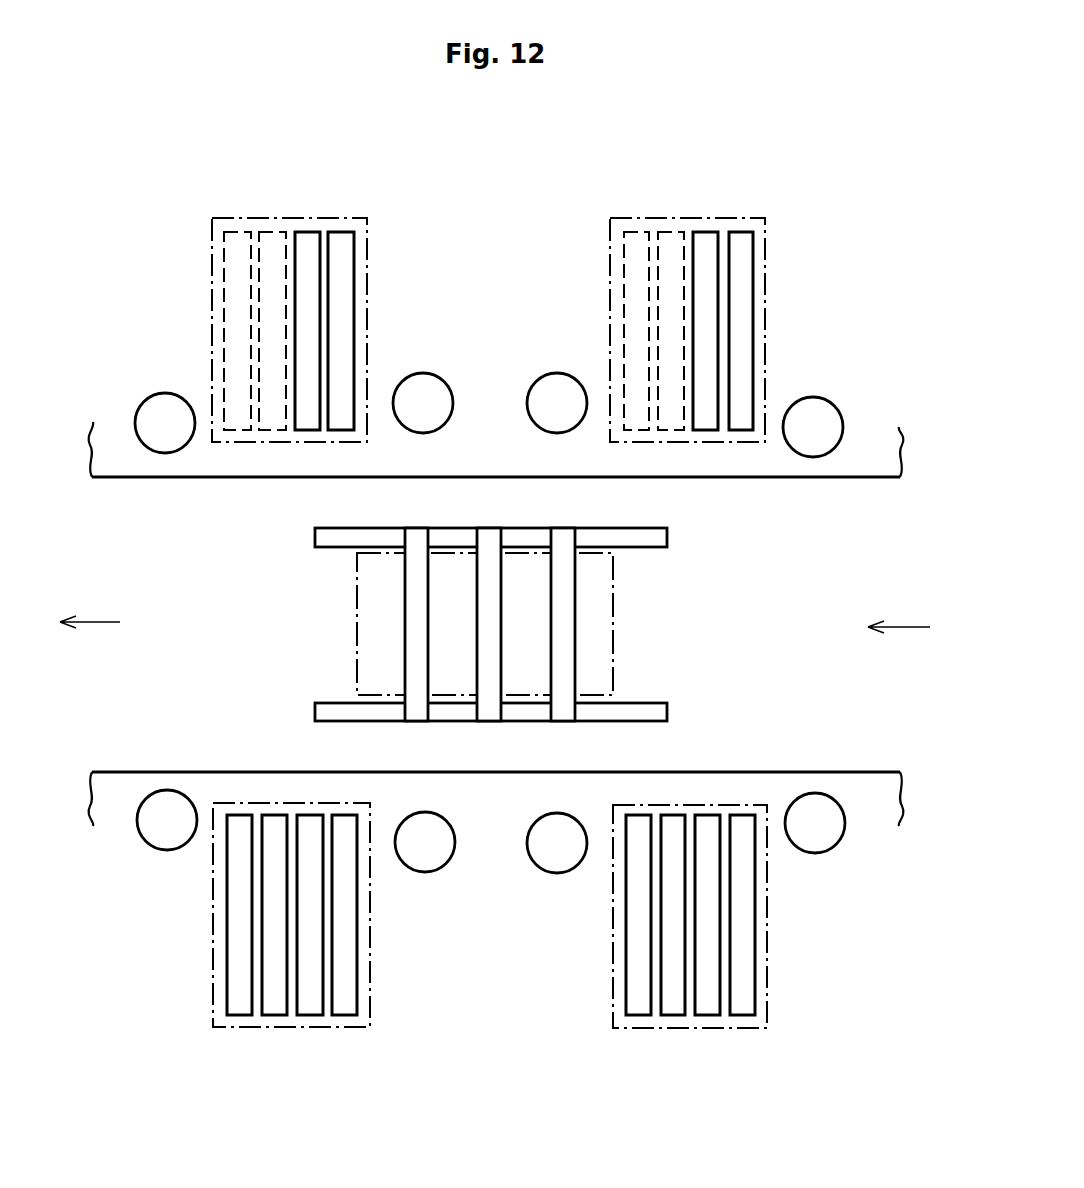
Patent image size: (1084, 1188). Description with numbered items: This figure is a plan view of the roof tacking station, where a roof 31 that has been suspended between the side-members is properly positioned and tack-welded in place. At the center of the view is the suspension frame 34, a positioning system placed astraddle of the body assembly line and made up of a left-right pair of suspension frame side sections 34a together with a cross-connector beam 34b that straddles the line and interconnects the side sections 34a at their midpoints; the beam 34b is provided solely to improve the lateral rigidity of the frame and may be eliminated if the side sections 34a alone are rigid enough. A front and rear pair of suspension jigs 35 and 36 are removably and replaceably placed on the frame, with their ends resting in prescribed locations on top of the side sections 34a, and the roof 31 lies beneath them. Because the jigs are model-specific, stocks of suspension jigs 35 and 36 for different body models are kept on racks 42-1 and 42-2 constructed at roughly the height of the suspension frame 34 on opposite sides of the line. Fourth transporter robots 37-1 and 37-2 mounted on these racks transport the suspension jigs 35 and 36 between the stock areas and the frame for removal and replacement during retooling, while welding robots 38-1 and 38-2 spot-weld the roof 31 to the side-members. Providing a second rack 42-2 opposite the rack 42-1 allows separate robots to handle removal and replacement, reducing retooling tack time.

The roof 31 is at (592, 653).
The suspension frame 34 is at (667, 538).
The suspension frame side sections 34a is at (357, 723).
The cross-connector beam 34b is at (488, 716).
The suspension jig 35 is at (343, 258).
The suspension jig 36 is at (740, 260).
The fourth transporter robot 37-1 is at (165, 393).
The fourth transporter robot 37-2 is at (813, 397).
The welding robot 38-1 is at (423, 373).
The welding robot 38-2 is at (557, 373).
The rack 42-1 is at (850, 771).
The rack 42-2 is at (853, 479).